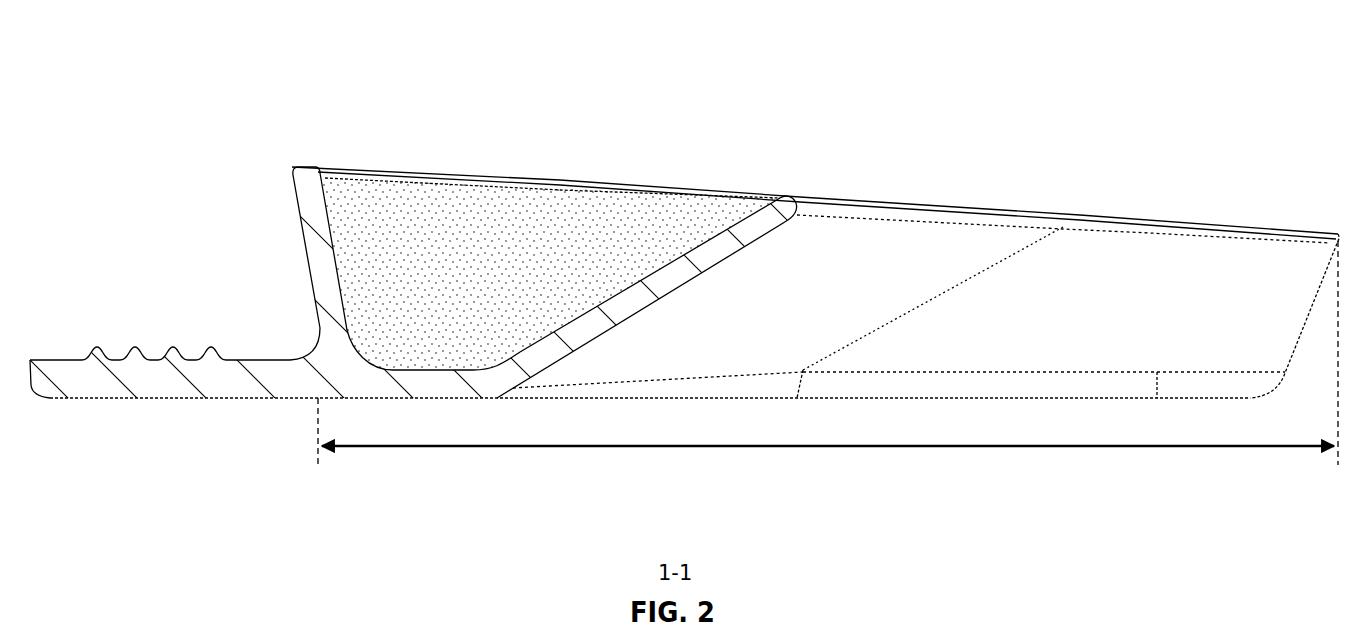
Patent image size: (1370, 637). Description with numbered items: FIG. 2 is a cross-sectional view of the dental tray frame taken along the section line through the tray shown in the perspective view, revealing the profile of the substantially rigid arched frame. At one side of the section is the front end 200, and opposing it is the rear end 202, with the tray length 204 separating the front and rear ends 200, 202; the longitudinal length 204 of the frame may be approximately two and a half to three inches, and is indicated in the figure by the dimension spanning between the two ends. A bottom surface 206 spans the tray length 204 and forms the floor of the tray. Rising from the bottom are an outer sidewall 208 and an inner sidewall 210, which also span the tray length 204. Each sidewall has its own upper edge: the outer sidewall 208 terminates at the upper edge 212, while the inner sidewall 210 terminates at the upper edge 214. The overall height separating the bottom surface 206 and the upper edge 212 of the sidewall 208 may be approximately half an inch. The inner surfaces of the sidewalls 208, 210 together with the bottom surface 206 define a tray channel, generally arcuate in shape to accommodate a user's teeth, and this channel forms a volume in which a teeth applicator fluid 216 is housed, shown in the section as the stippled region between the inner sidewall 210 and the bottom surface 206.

The front end 200 is at (669, 318).
The rear end 202 is at (1305, 312).
The tray length 204 is at (1082, 448).
The bottom surface 206 is at (418, 370).
The outer sidewall 208 is at (305, 213).
The inner sidewall 210 is at (745, 222).
The upper edge 212 is at (302, 165).
The upper edge 214 is at (782, 200).
The teeth applicator fluid 216 is at (531, 248).